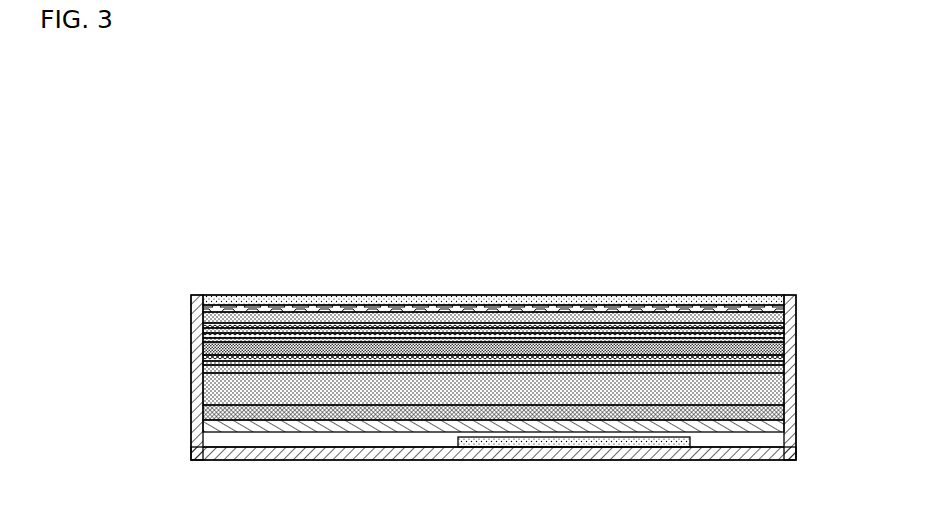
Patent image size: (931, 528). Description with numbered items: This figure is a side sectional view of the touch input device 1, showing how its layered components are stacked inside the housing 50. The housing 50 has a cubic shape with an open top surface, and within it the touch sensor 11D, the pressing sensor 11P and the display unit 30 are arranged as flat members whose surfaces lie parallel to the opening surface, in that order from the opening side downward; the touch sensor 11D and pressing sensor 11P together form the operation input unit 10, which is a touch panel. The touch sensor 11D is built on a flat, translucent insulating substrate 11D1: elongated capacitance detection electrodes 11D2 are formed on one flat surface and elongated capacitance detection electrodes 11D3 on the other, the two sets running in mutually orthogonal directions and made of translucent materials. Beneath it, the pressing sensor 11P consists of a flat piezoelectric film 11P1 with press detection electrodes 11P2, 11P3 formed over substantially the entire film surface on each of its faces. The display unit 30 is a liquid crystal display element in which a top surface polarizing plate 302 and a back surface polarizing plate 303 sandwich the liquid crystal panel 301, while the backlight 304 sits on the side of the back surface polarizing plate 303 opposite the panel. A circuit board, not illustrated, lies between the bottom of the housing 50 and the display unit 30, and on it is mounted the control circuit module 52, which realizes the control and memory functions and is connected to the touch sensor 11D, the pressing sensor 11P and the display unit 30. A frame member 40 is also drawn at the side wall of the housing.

The touch input device 1 is at (756, 241).
The operation input unit 10 is at (139, 246).
The touch sensor 11D is at (125, 272).
The insulating substrate 11D1 is at (206, 308).
The capacitance detection electrodes 11D2 is at (206, 298).
The capacitance detection electrodes 11D3 is at (206, 317).
The pressing sensor 11P is at (125, 338).
The piezoelectric film 11P1 is at (206, 350).
The press detection electrode 11P2 is at (206, 334).
The press detection electrode 11P3 is at (206, 360).
The display unit 30 is at (541, 402).
The liquid crystal panel 301 is at (796, 389).
The top surface polarizing plate 302 is at (796, 369).
The back surface polarizing plate 303 is at (796, 412).
The backlight 304 is at (796, 426).
The frame 40 is at (796, 298).
The housing 50 is at (497, 468).
The control circuit module 52 is at (648, 461).